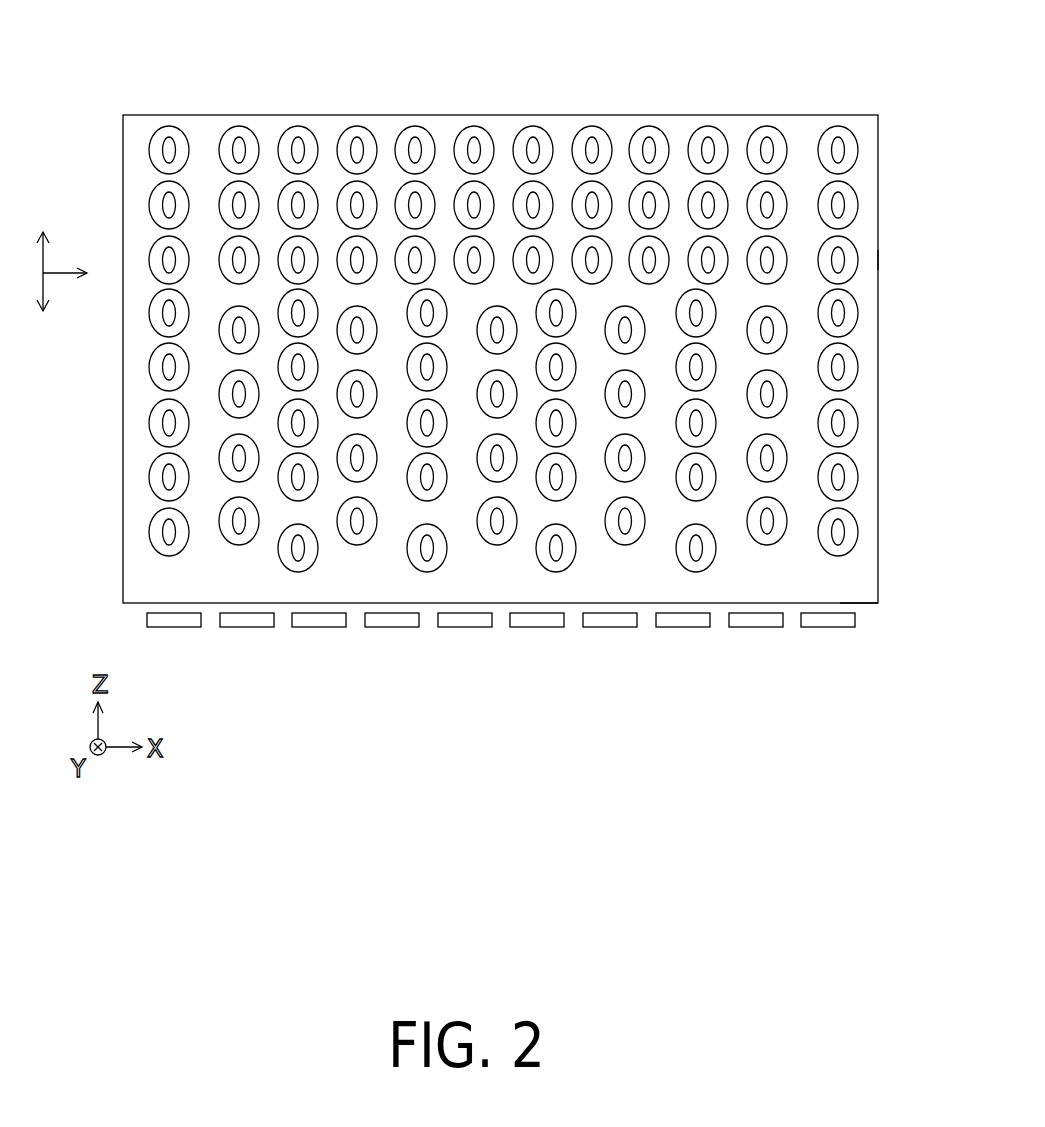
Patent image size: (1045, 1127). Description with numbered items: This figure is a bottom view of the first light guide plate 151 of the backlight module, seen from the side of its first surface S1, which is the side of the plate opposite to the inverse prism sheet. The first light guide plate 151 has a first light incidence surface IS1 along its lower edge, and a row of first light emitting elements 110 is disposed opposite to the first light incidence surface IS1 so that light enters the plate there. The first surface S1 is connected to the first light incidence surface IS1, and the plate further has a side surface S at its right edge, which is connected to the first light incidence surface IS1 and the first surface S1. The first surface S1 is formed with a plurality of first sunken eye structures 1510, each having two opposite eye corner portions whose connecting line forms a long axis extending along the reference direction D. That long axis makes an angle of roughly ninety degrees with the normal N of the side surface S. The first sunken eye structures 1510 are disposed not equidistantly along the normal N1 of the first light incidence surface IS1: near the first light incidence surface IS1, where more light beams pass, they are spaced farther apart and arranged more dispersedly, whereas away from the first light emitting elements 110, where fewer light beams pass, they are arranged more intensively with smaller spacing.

The first light guide plate 151 is at (156, 114).
The first sunken eye structure 1510 is at (298, 128).
The first surface S1 is at (202, 133).
The side surface S is at (878, 260).
The first light emitting element 110 is at (825, 630).
The first light incidence surface IS1 is at (865, 603).
The reference direction D is at (46, 255).
The normal of the side surface N is at (76, 275).
The normal of the first light incidence surface N1 is at (40, 339).